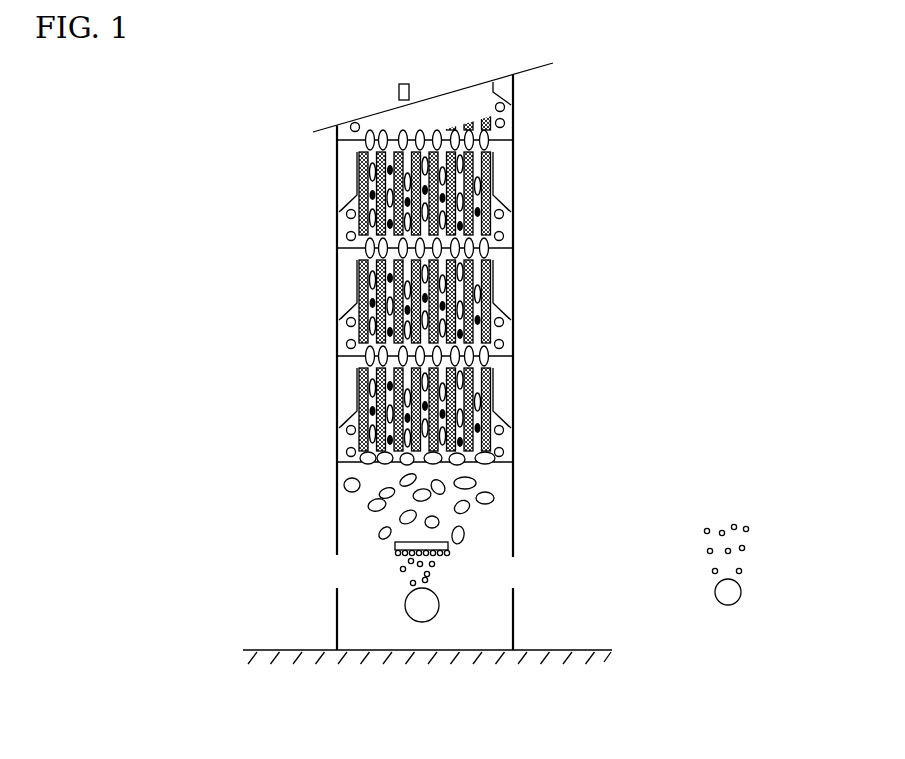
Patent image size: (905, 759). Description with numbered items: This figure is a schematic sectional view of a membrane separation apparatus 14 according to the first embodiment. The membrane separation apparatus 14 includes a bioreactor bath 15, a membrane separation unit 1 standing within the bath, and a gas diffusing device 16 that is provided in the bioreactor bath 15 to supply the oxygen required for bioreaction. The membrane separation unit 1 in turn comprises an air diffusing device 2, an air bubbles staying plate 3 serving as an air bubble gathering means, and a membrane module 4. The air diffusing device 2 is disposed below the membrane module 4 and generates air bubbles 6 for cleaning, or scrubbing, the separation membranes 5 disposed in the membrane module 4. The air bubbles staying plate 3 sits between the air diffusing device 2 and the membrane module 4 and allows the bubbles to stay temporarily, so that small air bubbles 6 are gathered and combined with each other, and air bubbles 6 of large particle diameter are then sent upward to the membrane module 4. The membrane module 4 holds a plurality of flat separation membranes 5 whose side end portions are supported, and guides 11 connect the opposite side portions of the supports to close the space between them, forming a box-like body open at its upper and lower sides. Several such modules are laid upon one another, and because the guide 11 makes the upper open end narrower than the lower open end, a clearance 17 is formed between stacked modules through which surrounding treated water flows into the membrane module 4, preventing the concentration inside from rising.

The membrane separation unit 1 is at (466, 348).
The air diffusing device 2 is at (440, 612).
The air bubbles staying plate 3 is at (450, 552).
The membrane module 4 is at (478, 254).
The separation membrane 5 is at (500, 265).
The air bubbles 6 is at (494, 498).
The guide 11 is at (500, 373).
The membrane separation apparatus 14 is at (209, 687).
The bioreactor bath 15 is at (280, 649).
The gas diffusing device 16 is at (741, 596).
The clearance 17 is at (513, 140).